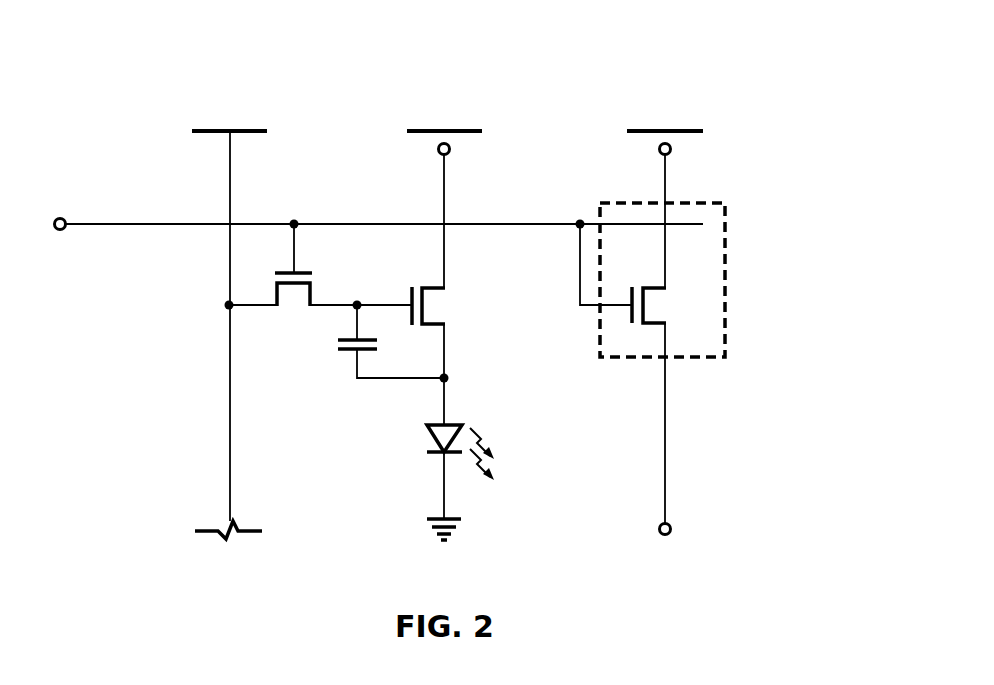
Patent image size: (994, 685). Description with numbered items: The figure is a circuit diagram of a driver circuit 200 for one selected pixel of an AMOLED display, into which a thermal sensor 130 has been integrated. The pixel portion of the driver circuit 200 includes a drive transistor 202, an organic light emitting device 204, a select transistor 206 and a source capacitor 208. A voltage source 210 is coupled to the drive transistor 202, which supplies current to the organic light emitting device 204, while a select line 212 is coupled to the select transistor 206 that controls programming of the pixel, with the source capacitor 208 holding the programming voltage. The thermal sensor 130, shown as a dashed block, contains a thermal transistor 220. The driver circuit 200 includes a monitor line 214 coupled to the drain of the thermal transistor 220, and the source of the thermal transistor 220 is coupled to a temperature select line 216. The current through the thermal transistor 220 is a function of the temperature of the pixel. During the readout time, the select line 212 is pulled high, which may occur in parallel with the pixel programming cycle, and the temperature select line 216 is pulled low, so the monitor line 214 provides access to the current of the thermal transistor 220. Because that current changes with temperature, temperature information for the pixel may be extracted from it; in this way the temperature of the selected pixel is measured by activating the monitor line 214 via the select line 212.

The driver circuit 200 is at (698, 47).
The drive transistor 202 is at (446, 308).
The organic light emitting device 204 is at (430, 442).
The select transistor 206 is at (312, 279).
The source capacitor 208 is at (333, 343).
The voltage source 210 is at (437, 149).
The select line 212 is at (63, 231).
The monitor line 214 is at (657, 149).
The temperature select line 216 is at (660, 523).
The thermal sensor 130 is at (727, 272).
The thermal transistor 220 is at (653, 300).